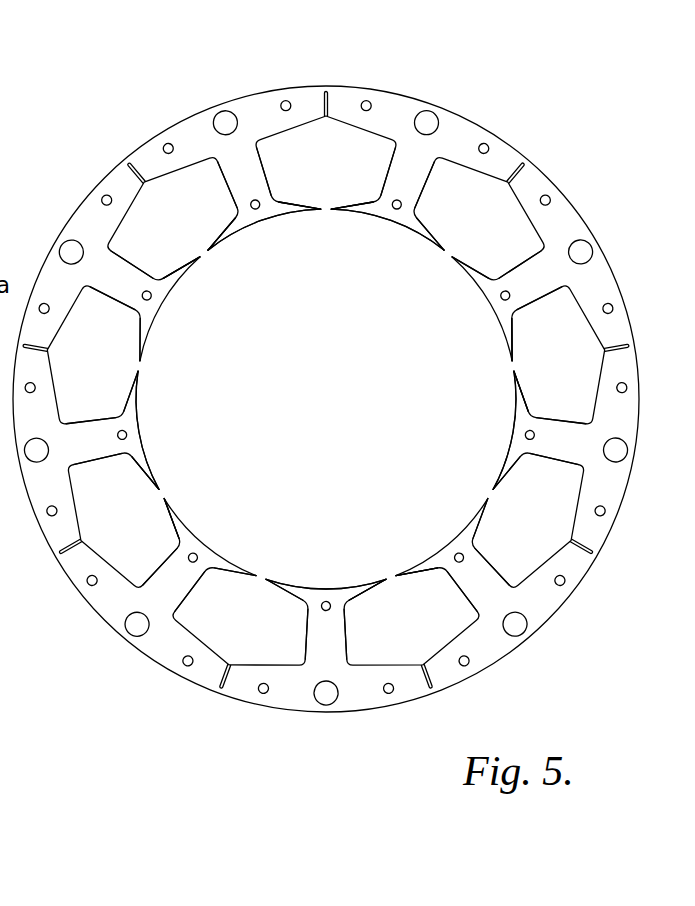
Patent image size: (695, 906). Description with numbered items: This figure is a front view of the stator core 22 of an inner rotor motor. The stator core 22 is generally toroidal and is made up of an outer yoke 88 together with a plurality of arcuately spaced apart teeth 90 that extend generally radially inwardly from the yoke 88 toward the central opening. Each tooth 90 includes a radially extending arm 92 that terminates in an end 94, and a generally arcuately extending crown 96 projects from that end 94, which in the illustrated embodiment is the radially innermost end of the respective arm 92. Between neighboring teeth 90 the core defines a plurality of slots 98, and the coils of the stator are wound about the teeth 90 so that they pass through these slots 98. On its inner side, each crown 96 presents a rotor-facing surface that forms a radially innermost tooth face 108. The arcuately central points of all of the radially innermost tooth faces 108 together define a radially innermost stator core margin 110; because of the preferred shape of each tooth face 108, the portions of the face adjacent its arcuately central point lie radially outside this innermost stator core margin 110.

The stator core 22 is at (482, 70).
The yoke 88 is at (556, 215).
The teeth 90 is at (243, 160).
The arm 92 is at (248, 178).
The end 94 is at (267, 203).
The crown 96 is at (256, 214).
The slots 98 is at (162, 205).
The radially innermost tooth face 108 is at (186, 280).
The radially innermost stator core margin 110 is at (172, 312).